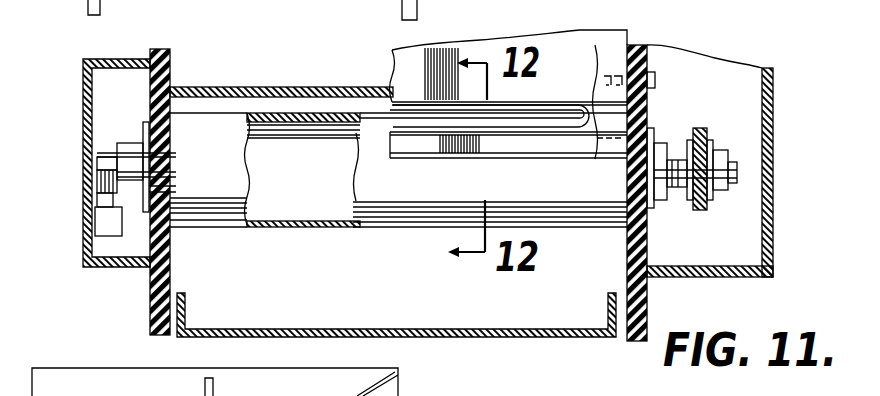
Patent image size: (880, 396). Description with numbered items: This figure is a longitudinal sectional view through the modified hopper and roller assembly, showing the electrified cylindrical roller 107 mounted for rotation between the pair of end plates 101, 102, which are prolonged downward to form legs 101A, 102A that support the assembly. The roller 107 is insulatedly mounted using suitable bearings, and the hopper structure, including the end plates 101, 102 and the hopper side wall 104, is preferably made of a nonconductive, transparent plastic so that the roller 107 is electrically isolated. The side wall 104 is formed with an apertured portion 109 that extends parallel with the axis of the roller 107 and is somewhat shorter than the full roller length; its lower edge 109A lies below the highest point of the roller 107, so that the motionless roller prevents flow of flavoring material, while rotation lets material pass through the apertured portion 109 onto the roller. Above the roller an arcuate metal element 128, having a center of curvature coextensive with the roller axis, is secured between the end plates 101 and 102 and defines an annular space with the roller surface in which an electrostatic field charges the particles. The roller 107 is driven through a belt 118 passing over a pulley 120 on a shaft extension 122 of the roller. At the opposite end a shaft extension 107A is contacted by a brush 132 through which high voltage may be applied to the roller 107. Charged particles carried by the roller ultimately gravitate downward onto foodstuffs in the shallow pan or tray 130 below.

The end plate 101 is at (163, 49).
The leg 101A is at (153, 278).
The end plate 102 is at (648, 44).
The leg 102A is at (648, 310).
The hopper side wall 104 is at (577, 45).
The cylindrical roller 107 is at (413, 217).
The shaft extension 107A is at (105, 160).
The apertured portion 109 is at (533, 110).
The lower edge of apertured portion 109A is at (547, 128).
The belt 118 is at (702, 128).
The pulley 120 is at (712, 145).
The shaft extension 122 is at (737, 193).
The arcuate metal element 128 is at (283, 88).
The pan or tray 130 is at (606, 338).
The brush 132 is at (100, 192).